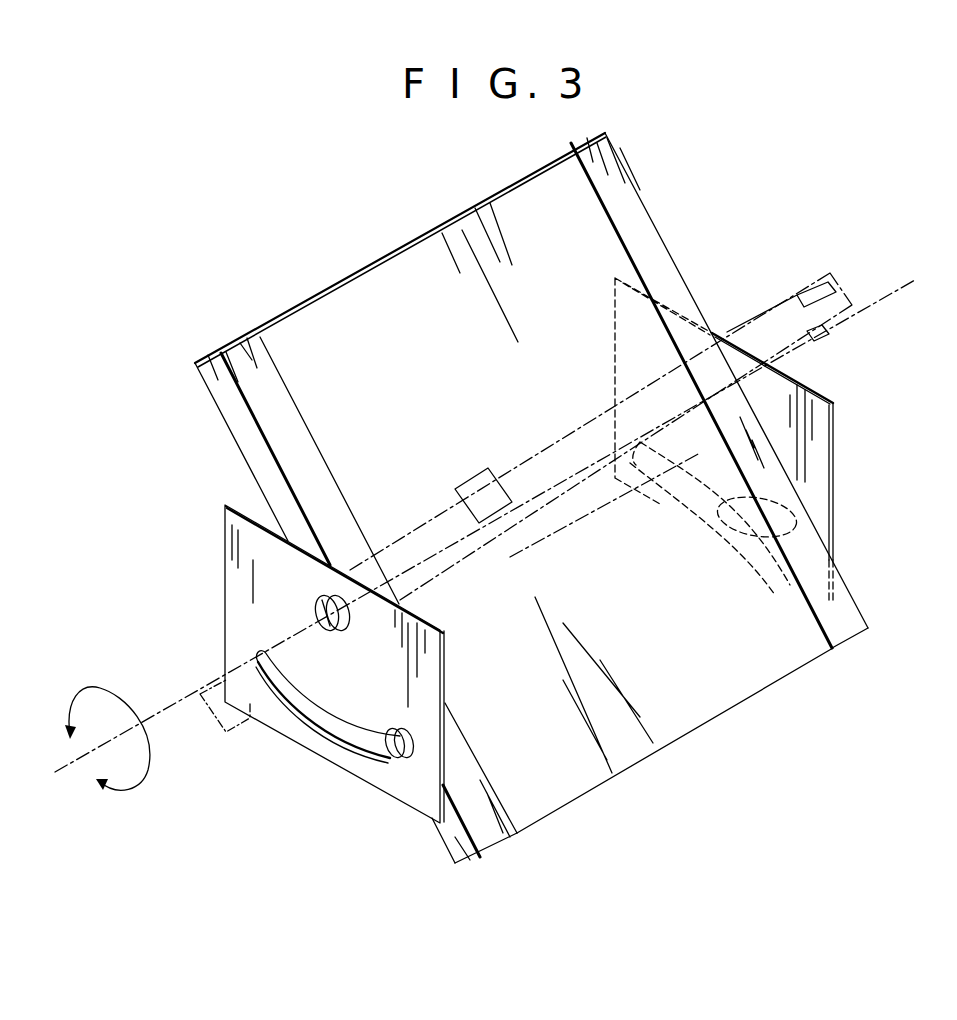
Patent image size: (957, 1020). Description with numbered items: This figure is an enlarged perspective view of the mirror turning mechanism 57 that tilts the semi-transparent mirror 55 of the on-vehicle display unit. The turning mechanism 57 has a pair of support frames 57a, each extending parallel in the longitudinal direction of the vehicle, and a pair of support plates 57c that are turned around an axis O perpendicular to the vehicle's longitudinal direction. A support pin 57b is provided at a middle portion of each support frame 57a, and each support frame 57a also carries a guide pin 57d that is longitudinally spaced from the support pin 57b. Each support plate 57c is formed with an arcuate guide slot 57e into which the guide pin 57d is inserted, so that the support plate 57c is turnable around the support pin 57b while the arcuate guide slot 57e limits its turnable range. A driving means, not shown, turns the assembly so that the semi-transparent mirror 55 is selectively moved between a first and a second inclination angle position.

The semi-transparent mirror 55 is at (378, 292).
The mirror turning mechanism 57 is at (705, 745).
The support frame 57a is at (645, 225).
The support pin 57b is at (317, 605).
The support plate 57c is at (818, 433).
The guide pin 57d is at (382, 758).
The arcuate guide slot 57e is at (298, 704).
The axis O is at (890, 290).